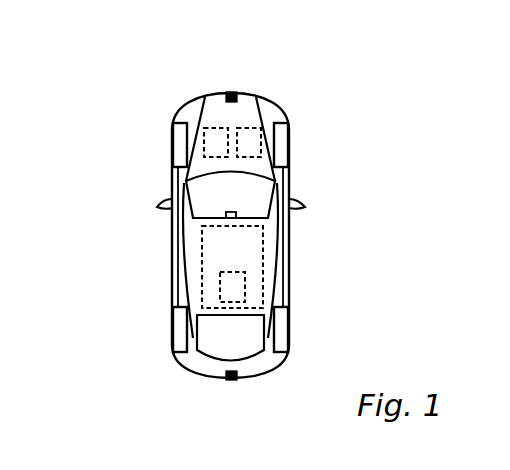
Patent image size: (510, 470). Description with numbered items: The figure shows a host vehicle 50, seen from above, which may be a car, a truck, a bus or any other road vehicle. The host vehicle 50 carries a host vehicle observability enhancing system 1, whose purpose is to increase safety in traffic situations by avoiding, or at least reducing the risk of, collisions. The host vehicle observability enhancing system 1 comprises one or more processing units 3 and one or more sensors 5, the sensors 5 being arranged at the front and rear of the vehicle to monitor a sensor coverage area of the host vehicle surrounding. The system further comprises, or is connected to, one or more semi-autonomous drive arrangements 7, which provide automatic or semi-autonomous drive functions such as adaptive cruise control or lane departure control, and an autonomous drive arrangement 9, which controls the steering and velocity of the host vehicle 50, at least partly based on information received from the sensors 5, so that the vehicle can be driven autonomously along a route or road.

The host vehicle 50 is at (126, 204).
The sensor 5 is at (230, 92).
The semi-autonomous drive arrangement 7 is at (216, 142).
The autonomous drive arrangement 9 is at (249, 142).
The host vehicle observability enhancing system 1 is at (232, 267).
The processing unit 3 is at (232, 287).